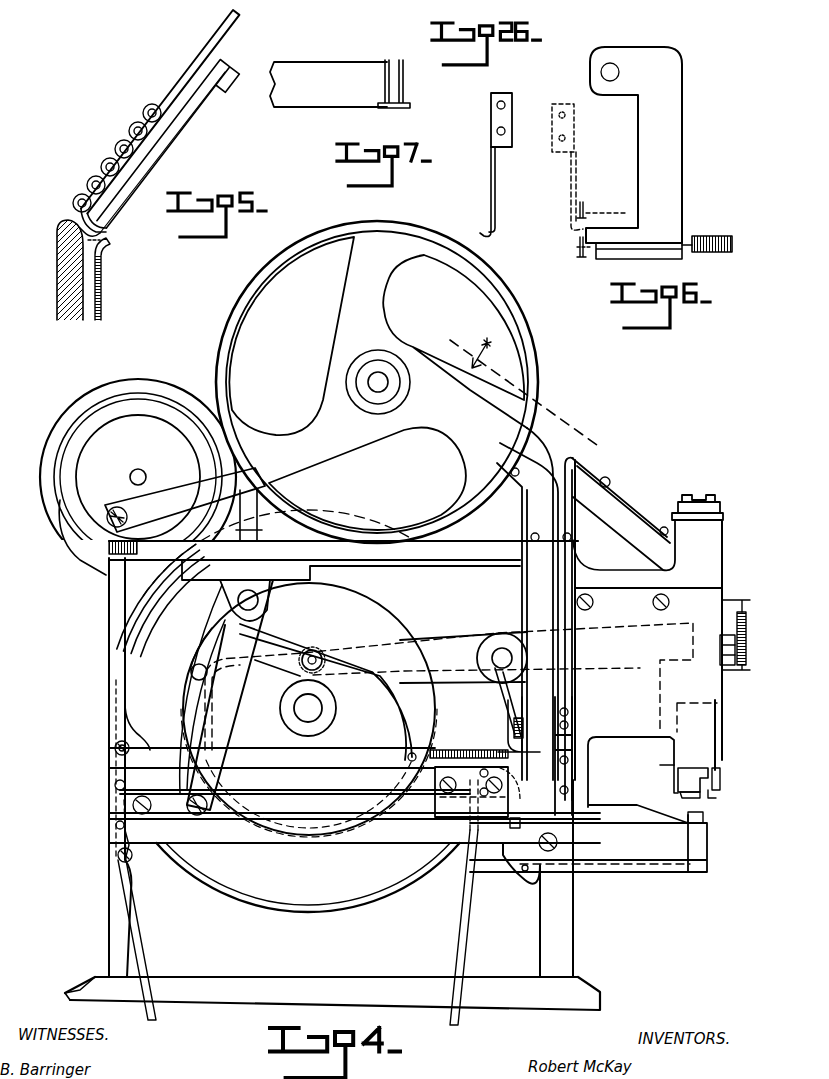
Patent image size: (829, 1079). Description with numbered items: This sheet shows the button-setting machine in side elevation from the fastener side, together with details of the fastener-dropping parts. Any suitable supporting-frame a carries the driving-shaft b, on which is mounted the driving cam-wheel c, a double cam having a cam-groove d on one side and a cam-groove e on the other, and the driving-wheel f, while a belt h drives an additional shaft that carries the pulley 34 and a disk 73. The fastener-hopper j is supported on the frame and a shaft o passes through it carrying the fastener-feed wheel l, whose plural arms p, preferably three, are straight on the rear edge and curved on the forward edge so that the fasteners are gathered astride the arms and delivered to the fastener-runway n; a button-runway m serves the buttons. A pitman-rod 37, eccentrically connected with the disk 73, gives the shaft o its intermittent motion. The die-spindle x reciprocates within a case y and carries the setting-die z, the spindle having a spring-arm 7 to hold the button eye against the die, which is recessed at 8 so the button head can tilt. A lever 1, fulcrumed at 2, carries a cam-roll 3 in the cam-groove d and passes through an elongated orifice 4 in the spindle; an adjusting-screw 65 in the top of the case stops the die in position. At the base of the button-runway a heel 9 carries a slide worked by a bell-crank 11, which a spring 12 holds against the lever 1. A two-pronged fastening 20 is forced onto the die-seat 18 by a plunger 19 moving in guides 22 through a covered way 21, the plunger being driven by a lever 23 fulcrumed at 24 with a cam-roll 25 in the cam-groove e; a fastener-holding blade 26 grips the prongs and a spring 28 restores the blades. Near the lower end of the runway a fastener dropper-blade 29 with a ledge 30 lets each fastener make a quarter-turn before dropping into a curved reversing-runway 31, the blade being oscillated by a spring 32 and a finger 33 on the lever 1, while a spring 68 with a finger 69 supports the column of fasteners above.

In FIG. 4, the lever 1 is at (463, 657).
In FIG. 4, the fulcrum 2 is at (492, 678).
In FIG. 4, the cam-roll 3 is at (315, 650).
In FIG. 4, the elongated orifice 4 is at (299, 805).
In FIG. 4, the spring-arm 7 is at (717, 799).
In FIG. 4, the recess 8 is at (722, 784).
In FIG. 4, the heel 9 is at (668, 782).
In FIG. 4, the bell-crank 11 is at (733, 680).
In FIG. 4, the spring 12 is at (748, 636).
In FIG. 4, the die-seat 18 is at (526, 391).
In FIG. 26, the plunger 19 is at (328, 84).
In FIG. 5, the two-pronged fastening 20 is at (132, 148).
In FIG. 26, the two-pronged fastening 20 is at (405, 88).
In FIG. 6, the two-pronged fastening 20 is at (596, 215).
In FIG. 4, the two-pronged fastening 20 is at (520, 824).
In FIG. 4, the covered way 21 is at (622, 822).
In FIG. 4, the guides 22 is at (461, 792).
In FIG. 4, the lever 23 is at (226, 697).
In FIG. 4, the fulcrum 24 is at (268, 590).
In FIG. 4, the cam-roll 25 is at (191, 674).
In FIG. 4, the fastener-holding blade 26 is at (707, 850).
In FIG. 4, the spring 28 is at (694, 873).
In FIG. 5, the fastener dropper-blade 29 is at (168, 148).
In FIG. 6, the fastener dropper-blade 29 is at (634, 145).
In FIG. 4, the fastener dropper-blade 29 is at (508, 748).
In FIG. 5, the ledge 30 is at (108, 232).
In FIG. 6, the ledge 30 is at (641, 252).
In FIG. 5, the reversing-runway 31 is at (99, 285).
In FIG. 4, the reversing-runway 31 is at (499, 785).
In FIG. 6, the spring 32 is at (707, 230).
In FIG. 4, the spring 32 is at (469, 744).
In FIG. 4, the finger 33 is at (512, 725).
In FIG. 4, the pulley 34 is at (62, 428).
In FIG. 4, the pitman-rod 37 is at (185, 504).
In FIG. 4, the adjusting-screw 65 is at (697, 494).
In FIG. 5, the spring 68 is at (150, 172).
In FIG. 7, the spring 68 is at (491, 120).
In FIG. 6, the spring 68 is at (575, 140).
In FIG. 4, the spring 68 is at (563, 742).
In FIG. 5, the finger 69 is at (112, 224).
In FIG. 7, the finger 69 is at (486, 236).
In FIG. 6, the finger 69 is at (568, 230).
In FIG. 4, the disk 73 is at (138, 477).
In FIG. 4, the supporting-frame a is at (125, 660).
In FIG. 4, the driving-shaft b is at (320, 712).
In FIG. 4, the driving cam-wheel c is at (309, 710).
In FIG. 4, the cam-groove d is at (377, 783).
In FIG. 4, the cam-groove e is at (388, 682).
In FIG. 4, the driving-wheel f is at (350, 890).
In FIG. 4, the belt h is at (108, 600).
In FIG. 4, the fastener-hopper j is at (251, 373).
In FIG. 4, the fastener-feed wheel l is at (305, 348).
In FIG. 4, the button-runway m is at (621, 500).
In FIG. 5, the fastener-runway n is at (205, 48).
In FIG. 4, the fastener-runway n is at (535, 614).
In FIG. 4, the shaft o is at (388, 384).
In FIG. 4, the arms p is at (377, 382).
In FIG. 4, the die-spindle x is at (693, 768).
In FIG. 4, the case y is at (472, 620).
In FIG. 4, the setting-die z is at (684, 795).